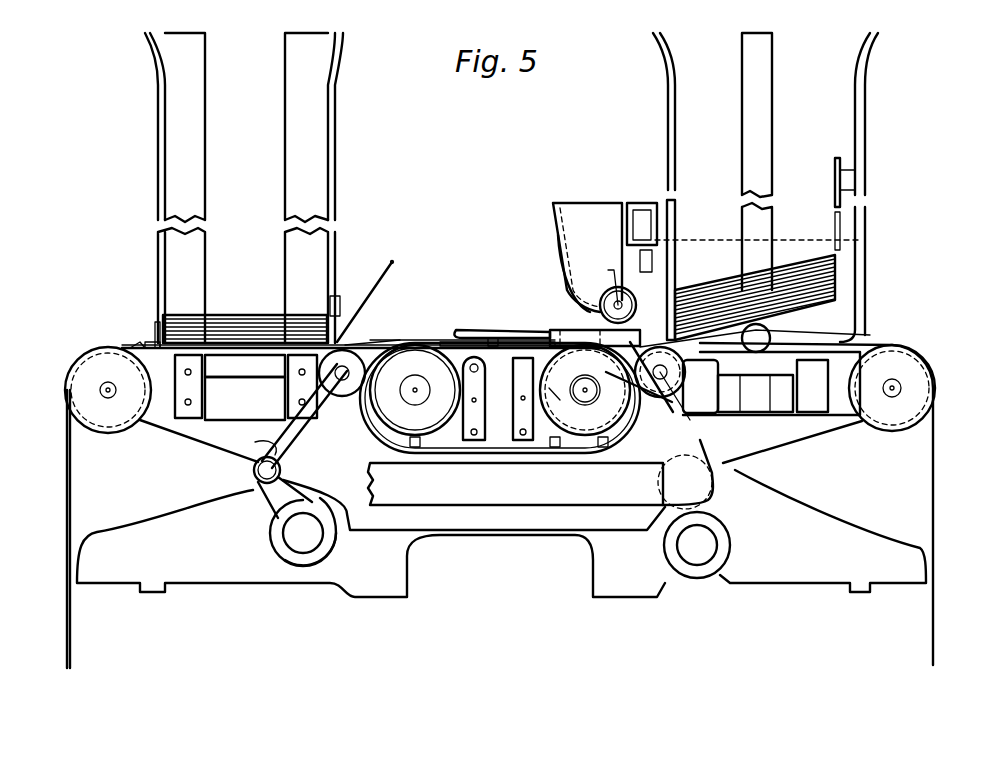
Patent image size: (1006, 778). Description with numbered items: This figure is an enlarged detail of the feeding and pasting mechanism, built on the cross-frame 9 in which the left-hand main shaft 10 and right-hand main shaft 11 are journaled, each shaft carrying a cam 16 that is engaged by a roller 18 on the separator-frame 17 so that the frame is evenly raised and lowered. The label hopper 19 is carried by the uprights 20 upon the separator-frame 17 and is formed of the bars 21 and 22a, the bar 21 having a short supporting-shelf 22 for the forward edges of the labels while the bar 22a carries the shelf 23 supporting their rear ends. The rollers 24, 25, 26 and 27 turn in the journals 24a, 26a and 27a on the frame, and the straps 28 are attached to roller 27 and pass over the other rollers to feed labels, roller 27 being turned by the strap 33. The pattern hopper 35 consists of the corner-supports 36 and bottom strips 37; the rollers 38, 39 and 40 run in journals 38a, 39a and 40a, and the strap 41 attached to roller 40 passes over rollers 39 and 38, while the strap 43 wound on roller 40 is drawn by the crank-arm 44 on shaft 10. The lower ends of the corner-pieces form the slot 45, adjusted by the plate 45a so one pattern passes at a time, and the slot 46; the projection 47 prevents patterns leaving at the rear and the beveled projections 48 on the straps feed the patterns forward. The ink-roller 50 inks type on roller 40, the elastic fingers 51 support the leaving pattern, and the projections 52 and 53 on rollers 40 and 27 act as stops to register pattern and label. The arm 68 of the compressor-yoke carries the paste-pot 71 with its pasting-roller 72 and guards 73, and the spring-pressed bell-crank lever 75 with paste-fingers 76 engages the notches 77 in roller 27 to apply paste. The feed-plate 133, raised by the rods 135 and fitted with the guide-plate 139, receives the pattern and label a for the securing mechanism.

The cross-frame 9 is at (200, 445).
The left-hand main shaft 10 is at (303, 533).
The right-hand main shaft 11 is at (697, 545).
The cam 16 is at (730, 548).
The separator-frame 17 is at (532, 428).
The roller 18 is at (712, 505).
The hopper 19 is at (770, 115).
The upright 20 is at (760, 228).
The bar 21 is at (676, 150).
The supporting-shelf 22 is at (700, 386).
The bar 22a is at (858, 180).
The shelf 23 is at (838, 187).
The roller 24 is at (920, 355).
The journal 24a is at (892, 392).
The roller 25 is at (757, 345).
The roller 26 is at (660, 372).
The journal 26a is at (686, 418).
The roller 27 is at (585, 390).
The journal 27a is at (584, 400).
The strap 28 is at (948, 480).
The strap 33 is at (630, 460).
The hopper 35 is at (244, 188).
The corner-support 36 is at (243, 271).
The bottom strip 37 is at (245, 366).
The roller 38 is at (108, 390).
The journal 38a is at (108, 392).
The roller 39 is at (342, 373).
The journal 39a is at (448, 324).
The roller 40 is at (415, 390).
The journal 40a is at (412, 400).
The strap 41 is at (68, 500).
The strap 43 is at (310, 420).
The crank-arm 44 is at (262, 505).
The slot 45 is at (340, 340).
The adjustable plate 45a is at (410, 252).
The slot 46 is at (150, 343).
The projection 47 is at (157, 324).
The projection 48 is at (132, 345).
The ink-roller 50 is at (484, 398).
The elastic finger 51 is at (366, 343).
The projection 52 is at (422, 442).
The projection 53 is at (588, 399).
The arm 68 is at (642, 237).
The paste-pot 71 is at (587, 257).
The pasting-roller 72 is at (610, 310).
The guard 73 is at (640, 300).
The bell-crank lever 75 is at (523, 399).
The paste-finger 76 is at (625, 343).
The notch 77 is at (554, 399).
The feed-plate 133 is at (455, 330).
The upright rod 135 is at (530, 342).
The guide-plate 139 is at (493, 338).
The pattern and label a is at (245, 329).